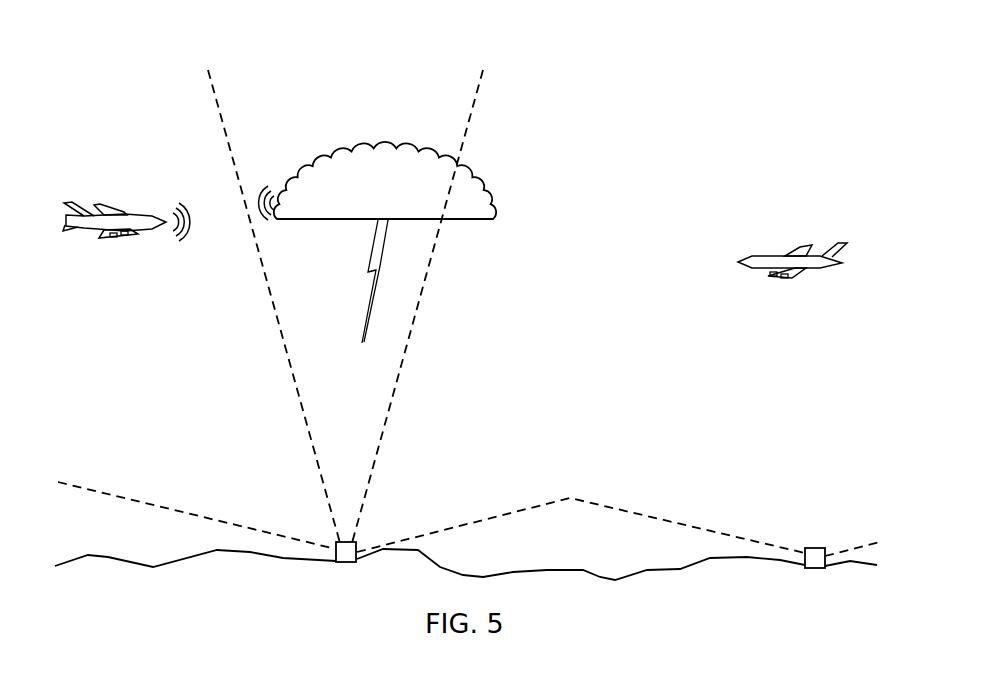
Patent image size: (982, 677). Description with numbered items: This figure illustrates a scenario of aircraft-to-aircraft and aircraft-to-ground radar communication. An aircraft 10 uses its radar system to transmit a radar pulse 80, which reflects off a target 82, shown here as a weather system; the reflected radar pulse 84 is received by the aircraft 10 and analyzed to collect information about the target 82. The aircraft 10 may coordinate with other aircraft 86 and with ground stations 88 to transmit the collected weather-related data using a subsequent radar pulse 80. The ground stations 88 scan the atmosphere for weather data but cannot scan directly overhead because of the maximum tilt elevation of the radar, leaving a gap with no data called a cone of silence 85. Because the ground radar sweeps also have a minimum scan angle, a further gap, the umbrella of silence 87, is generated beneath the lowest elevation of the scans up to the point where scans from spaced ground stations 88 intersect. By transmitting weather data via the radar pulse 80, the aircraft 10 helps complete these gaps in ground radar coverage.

The aircraft 10 is at (127, 211).
The radar pulse 80 is at (186, 228).
The target 82 is at (375, 152).
The reflected radar pulse 84 is at (262, 195).
The cone of silence 85 is at (400, 372).
The other aircraft 86 is at (805, 270).
The umbrella of silence 87 is at (624, 500).
The ground station 88 is at (358, 545).